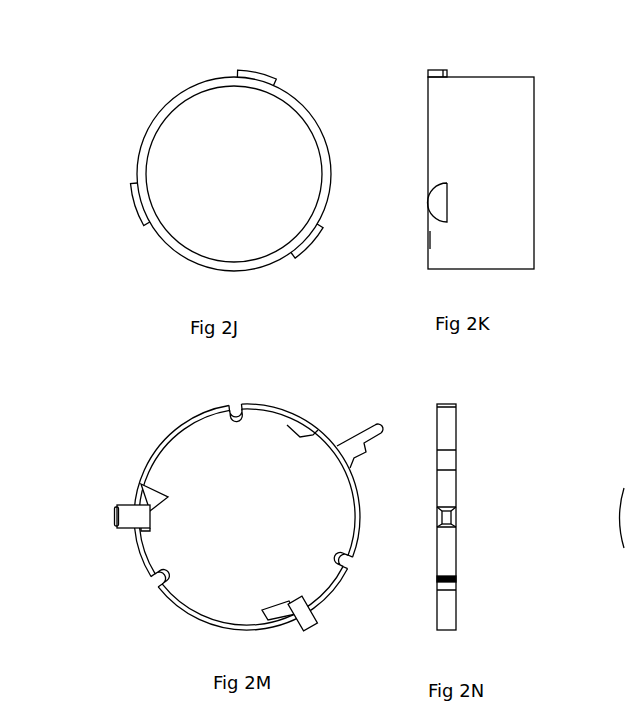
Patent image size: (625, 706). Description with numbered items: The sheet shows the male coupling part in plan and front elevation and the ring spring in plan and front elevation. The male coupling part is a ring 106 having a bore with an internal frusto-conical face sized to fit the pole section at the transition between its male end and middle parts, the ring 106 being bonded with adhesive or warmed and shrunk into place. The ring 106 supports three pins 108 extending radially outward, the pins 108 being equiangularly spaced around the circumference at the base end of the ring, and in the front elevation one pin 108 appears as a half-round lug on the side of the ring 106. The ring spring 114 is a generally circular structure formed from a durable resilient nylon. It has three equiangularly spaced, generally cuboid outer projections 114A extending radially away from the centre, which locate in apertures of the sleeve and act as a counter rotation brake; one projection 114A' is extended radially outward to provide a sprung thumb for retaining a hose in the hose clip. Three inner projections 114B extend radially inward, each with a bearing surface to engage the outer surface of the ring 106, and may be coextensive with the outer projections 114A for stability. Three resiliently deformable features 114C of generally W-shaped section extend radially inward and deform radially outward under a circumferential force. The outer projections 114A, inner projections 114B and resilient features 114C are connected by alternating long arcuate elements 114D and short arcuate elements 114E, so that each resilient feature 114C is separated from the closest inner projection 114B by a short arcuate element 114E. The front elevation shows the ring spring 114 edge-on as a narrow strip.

In FIG. 2J, the ring 106 is at (178, 93).
In FIG. 2K, the ring 106 is at (533, 210).
In FIG. 2J, the pins 108 is at (253, 72).
In FIG. 2K, the pins 108 is at (442, 70).
In FIG. 2M, the ring spring 114 is at (224, 513).
In FIG. 2N, the ring spring 114 is at (456, 418).
In FIG. 2M, the outer projections 114A is at (224, 546).
In FIG. 2M, the projection 114A' is at (380, 420).
In FIG. 2M, the inner projections 114B is at (168, 497).
In FIG. 2M, the resiliently deformable features 114C is at (232, 405).
In FIG. 2M, the long arcuate elements 114D is at (157, 445).
In FIG. 2M, the short arcuate elements 114E is at (268, 408).